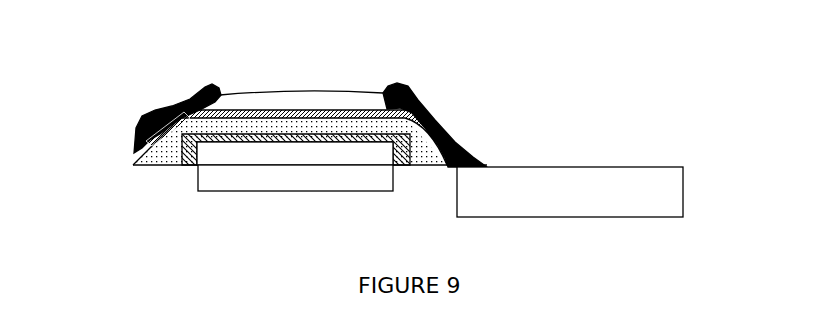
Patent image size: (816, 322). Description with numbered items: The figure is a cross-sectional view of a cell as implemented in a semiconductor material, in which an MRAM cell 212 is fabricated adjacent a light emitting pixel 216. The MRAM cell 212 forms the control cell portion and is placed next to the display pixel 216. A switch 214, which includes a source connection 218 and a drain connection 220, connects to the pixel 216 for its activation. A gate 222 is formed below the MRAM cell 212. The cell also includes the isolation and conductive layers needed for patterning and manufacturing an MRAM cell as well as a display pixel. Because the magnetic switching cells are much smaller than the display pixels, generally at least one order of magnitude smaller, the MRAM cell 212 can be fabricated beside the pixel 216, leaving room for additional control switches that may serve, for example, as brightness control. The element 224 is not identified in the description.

The MRAM cell 212 is at (413, 115).
The switch 214 is at (452, 68).
The light emitting pixel 216 is at (618, 169).
The source connection 218 is at (147, 112).
The drain connection 220 is at (465, 143).
The gate 222 is at (228, 192).
The cover / lid 224 is at (263, 110).